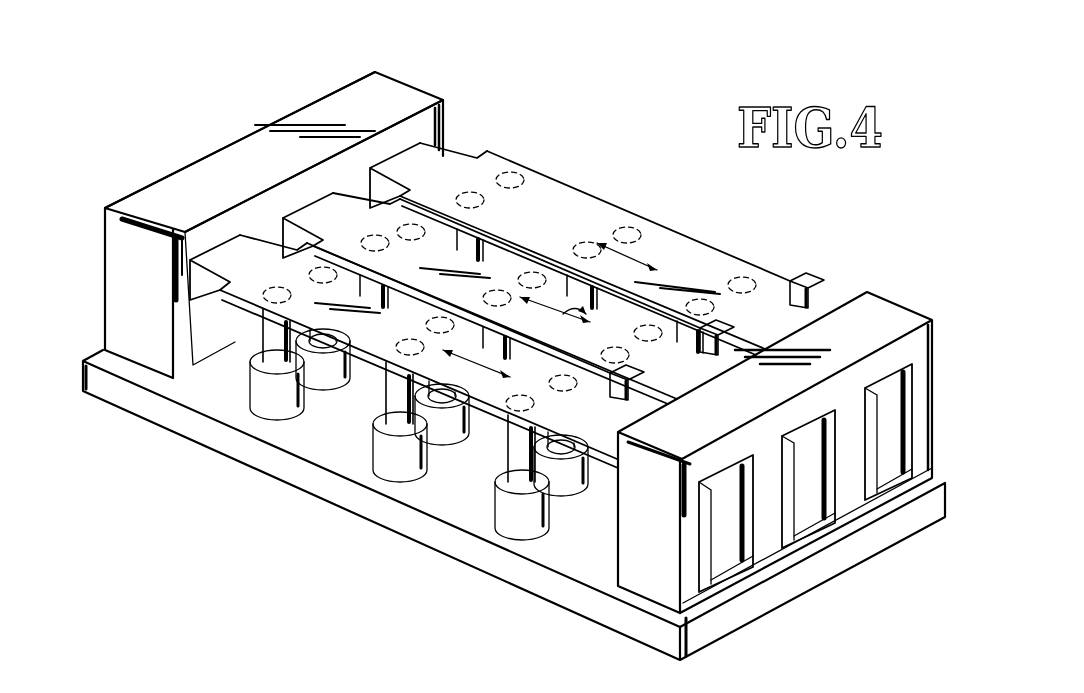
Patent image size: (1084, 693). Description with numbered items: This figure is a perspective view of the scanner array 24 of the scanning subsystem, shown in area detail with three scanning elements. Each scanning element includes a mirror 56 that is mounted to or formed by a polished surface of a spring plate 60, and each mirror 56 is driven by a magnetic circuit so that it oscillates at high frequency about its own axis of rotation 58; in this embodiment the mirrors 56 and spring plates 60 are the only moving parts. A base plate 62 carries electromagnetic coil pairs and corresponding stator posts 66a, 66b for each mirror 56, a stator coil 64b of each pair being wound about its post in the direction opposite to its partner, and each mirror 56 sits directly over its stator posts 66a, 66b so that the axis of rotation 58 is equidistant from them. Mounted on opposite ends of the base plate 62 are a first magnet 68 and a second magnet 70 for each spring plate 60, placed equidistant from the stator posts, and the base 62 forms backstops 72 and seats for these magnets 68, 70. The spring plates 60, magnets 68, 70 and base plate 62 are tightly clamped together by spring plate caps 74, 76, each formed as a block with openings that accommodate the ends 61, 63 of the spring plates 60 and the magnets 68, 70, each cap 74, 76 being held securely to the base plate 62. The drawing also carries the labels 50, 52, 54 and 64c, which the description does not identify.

The scanner array 24 is at (670, 138).
The housing end wall 50 is at (212, 228).
The end wall front face 52 is at (292, 190).
The end wall rear edge 54 is at (390, 143).
The mirror 56 is at (342, 335).
The axis of rotation 58 is at (478, 476).
The spring plate 60 is at (238, 231).
The end of spring plate 61 is at (225, 274).
The base plate 62 is at (788, 592).
The end of spring plate 63 is at (584, 425).
The stator coil 64b is at (320, 380).
The ring spacer 64c is at (252, 400).
The stator post 66a is at (263, 327).
The stator post 66b is at (320, 272).
The first magnet 68 is at (388, 185).
The second magnet 70 is at (900, 427).
The backstop 72 is at (722, 582).
The spring plate cap 74 is at (283, 113).
The spring plate cap 76 is at (865, 305).